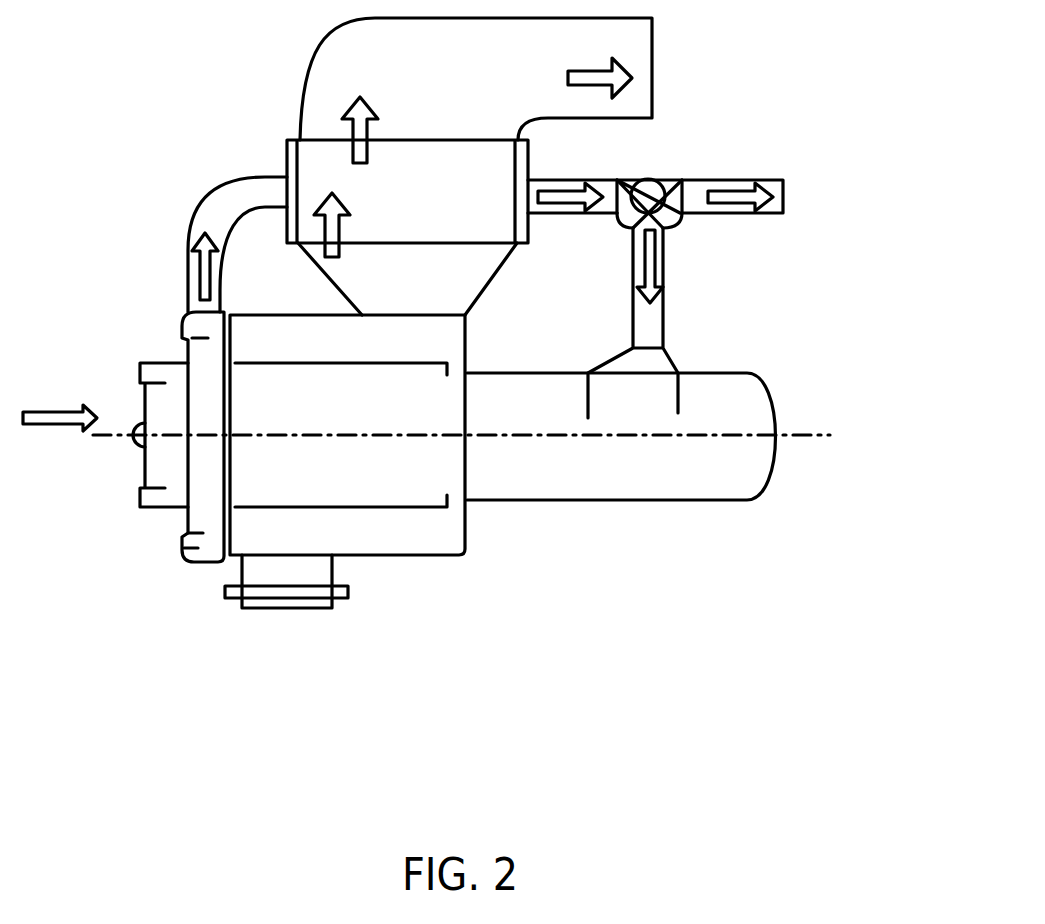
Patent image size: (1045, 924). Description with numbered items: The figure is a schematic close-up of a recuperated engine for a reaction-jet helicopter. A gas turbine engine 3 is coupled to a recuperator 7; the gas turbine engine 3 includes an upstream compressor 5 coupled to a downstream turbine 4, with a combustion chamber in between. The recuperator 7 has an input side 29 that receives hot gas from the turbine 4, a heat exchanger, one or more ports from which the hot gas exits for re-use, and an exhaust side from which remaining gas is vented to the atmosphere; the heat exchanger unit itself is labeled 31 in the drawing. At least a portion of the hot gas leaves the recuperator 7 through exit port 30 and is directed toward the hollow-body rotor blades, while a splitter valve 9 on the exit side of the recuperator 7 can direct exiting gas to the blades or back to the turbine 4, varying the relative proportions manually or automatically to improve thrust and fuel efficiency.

The gas turbine engine 3 is at (560, 555).
The turbine 4 is at (420, 543).
The compressor 5 is at (197, 548).
The recuperator 7 is at (320, 163).
The splitter valve 9 is at (648, 188).
The input side 29 is at (512, 260).
The exit port 30 is at (547, 179).
The separator box 31 is at (450, 137).